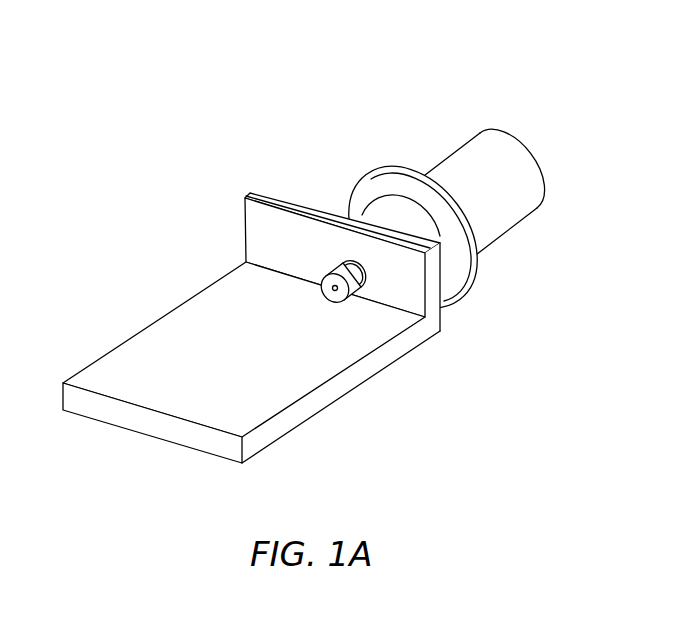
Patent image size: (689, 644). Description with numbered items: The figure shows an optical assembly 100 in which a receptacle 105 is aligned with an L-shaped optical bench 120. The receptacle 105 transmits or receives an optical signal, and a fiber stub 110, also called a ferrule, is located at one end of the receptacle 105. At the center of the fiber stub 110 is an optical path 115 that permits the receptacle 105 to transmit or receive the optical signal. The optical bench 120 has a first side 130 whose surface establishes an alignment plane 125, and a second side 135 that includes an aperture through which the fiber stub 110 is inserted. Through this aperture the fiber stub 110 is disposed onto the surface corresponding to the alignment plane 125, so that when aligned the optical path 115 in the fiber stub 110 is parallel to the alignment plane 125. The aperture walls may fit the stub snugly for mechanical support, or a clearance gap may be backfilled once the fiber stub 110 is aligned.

The optical assembly 100 is at (335, 236).
The receptacle 105 is at (525, 155).
The fiber stub 110 is at (264, 235).
The optical path 115 is at (333, 288).
The optical bench 120 is at (251, 328).
The alignment plane 125 is at (165, 365).
The first side 130 is at (157, 430).
The second side 135 is at (433, 283).